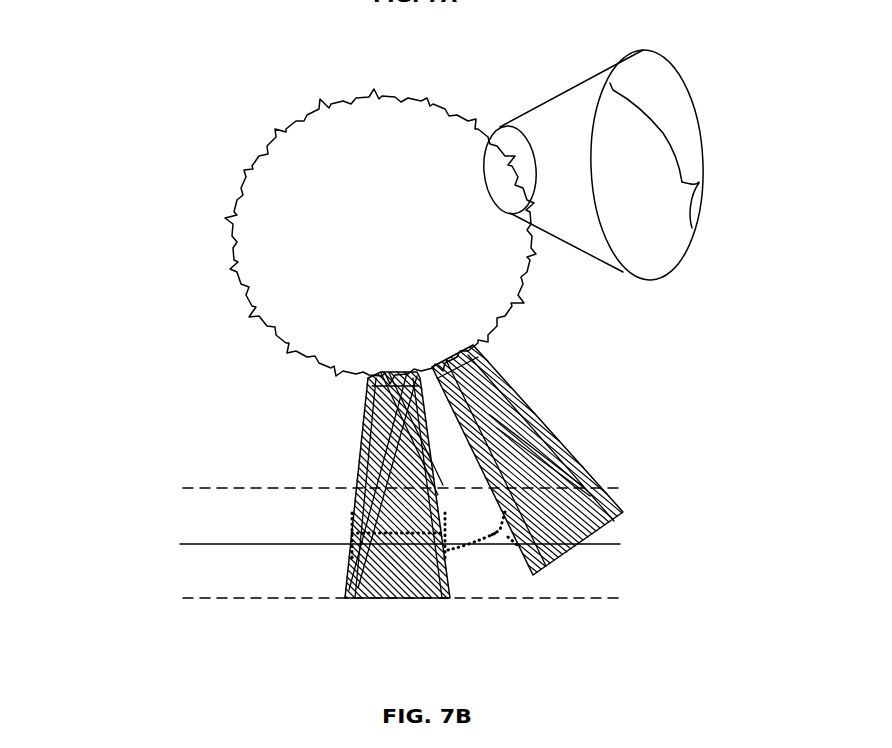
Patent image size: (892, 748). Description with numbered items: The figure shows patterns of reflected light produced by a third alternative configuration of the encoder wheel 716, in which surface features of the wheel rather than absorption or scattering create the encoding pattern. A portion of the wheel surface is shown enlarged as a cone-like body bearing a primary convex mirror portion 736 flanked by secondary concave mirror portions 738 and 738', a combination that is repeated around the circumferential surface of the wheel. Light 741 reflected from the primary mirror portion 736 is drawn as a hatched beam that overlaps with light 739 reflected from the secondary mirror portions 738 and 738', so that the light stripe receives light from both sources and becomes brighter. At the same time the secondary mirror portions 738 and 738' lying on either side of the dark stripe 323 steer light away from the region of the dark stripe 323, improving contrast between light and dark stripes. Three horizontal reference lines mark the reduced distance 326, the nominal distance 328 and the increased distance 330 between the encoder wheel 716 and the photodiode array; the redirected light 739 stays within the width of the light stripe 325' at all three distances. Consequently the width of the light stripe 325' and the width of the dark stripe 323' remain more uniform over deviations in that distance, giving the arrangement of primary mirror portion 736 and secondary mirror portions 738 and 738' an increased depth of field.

The encoder wheel 716 is at (277, 168).
The secondary concave mirror portion 738 is at (610, 141).
The primary convex mirror portion 736 is at (668, 142).
The secondary concave mirror portion 738' is at (763, 198).
The light reflected from the secondary mirror portions 739 is at (377, 393).
The light reflected from the primary mirror portion 741 is at (367, 450).
The dark stripe 323 is at (532, 460).
The width of the dark stripe 323' is at (515, 585).
The width of the light stripe 325' is at (364, 536).
The reduced distance 326 is at (180, 488).
The nominal distance 328 is at (180, 544).
The increased distance 330 is at (180, 598).